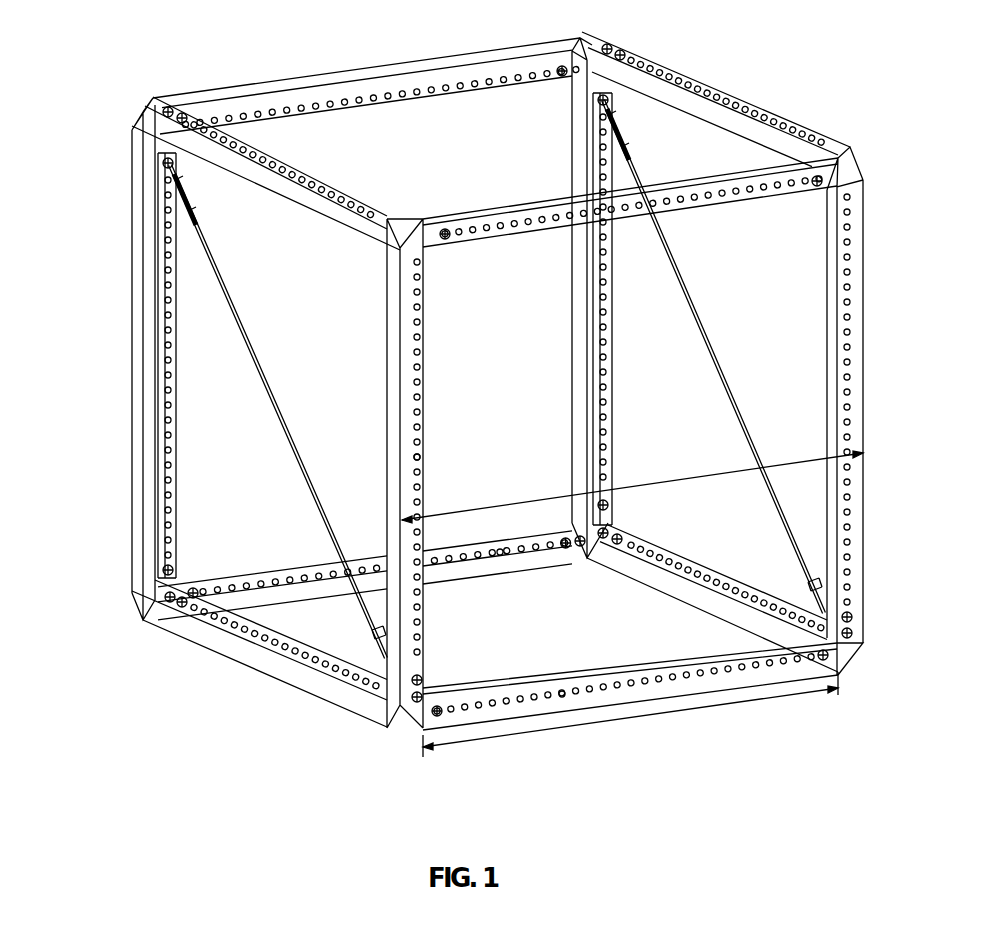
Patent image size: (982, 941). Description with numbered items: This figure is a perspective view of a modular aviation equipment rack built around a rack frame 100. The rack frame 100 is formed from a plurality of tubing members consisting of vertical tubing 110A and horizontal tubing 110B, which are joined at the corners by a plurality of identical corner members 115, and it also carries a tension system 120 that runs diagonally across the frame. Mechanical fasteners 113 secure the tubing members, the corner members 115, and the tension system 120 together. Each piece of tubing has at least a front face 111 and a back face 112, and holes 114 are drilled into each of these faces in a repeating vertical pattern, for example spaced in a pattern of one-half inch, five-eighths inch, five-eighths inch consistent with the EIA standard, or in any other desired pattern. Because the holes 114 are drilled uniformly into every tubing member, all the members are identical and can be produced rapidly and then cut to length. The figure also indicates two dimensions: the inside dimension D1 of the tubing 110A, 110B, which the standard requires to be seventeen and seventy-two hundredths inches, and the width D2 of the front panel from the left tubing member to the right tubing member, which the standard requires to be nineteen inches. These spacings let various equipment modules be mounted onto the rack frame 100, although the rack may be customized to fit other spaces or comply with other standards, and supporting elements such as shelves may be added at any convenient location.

The rack frame 100 is at (453, 398).
The vertical tubing 110A is at (580, 296).
The horizontal tubing 110B is at (497, 207).
The front face 111 is at (432, 362).
The back face 112 is at (380, 292).
The mechanical fastener 113 is at (560, 64).
The hole 114 is at (398, 466).
The corner member 115 is at (598, 45).
The tension system 120 is at (270, 350).
The inside dimension D1 is at (630, 720).
The width of the front panel D2 is at (632, 485).